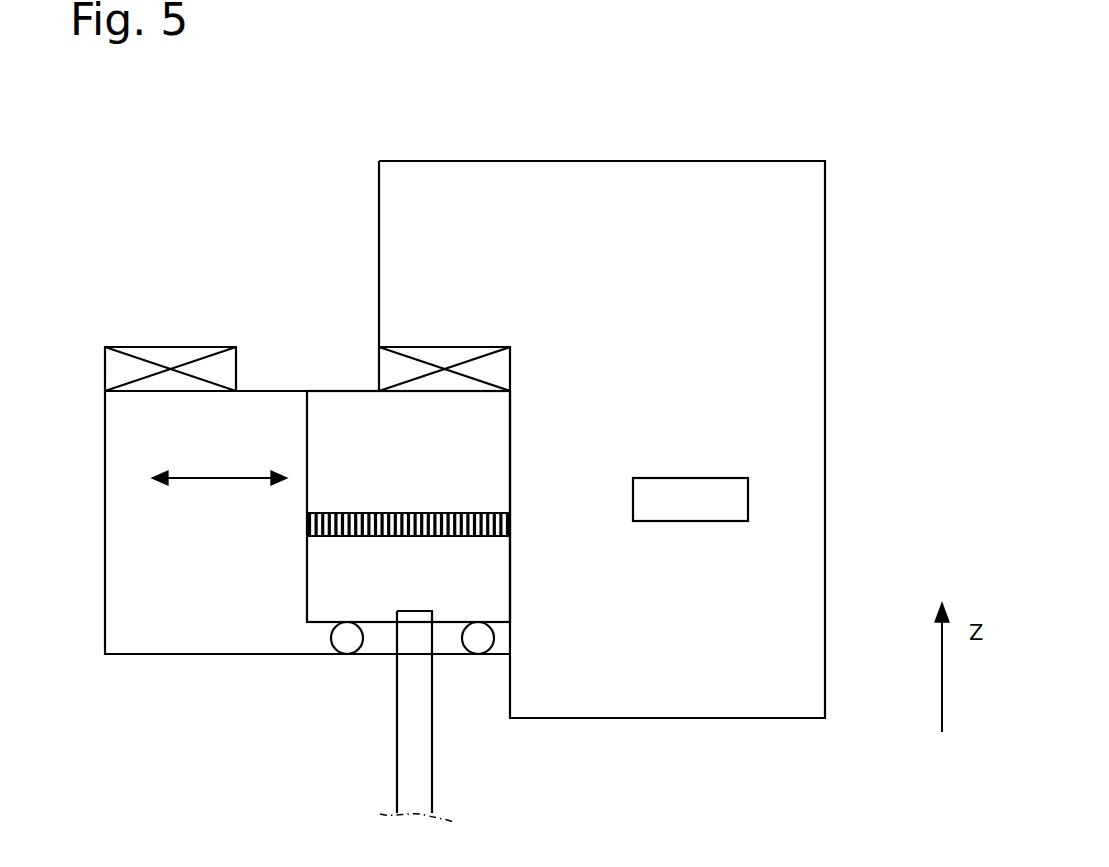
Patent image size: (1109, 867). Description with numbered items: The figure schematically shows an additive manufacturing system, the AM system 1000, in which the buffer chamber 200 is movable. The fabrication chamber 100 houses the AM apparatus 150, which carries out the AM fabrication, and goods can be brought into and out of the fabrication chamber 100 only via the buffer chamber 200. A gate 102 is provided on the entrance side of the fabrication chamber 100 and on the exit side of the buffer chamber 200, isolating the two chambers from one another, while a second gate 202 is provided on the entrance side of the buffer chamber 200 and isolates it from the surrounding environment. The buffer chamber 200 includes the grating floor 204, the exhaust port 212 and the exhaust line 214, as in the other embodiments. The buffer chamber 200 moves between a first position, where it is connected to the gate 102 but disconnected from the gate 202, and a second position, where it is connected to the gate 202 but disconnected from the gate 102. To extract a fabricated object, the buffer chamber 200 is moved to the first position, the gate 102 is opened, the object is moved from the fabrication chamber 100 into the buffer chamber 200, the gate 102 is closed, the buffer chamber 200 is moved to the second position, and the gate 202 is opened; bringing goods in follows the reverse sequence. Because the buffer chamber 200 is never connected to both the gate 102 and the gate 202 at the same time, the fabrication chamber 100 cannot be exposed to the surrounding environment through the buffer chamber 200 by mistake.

The AM system 1000 is at (258, 131).
The fabrication chamber 100 is at (624, 207).
The gate 102 is at (410, 355).
The AM apparatus 150 is at (748, 507).
The buffer chamber 200 is at (348, 402).
The gate 202 is at (123, 358).
The grating floor 204 is at (307, 525).
The exhaust port 212 is at (415, 617).
The exhaust line 214 is at (414, 736).